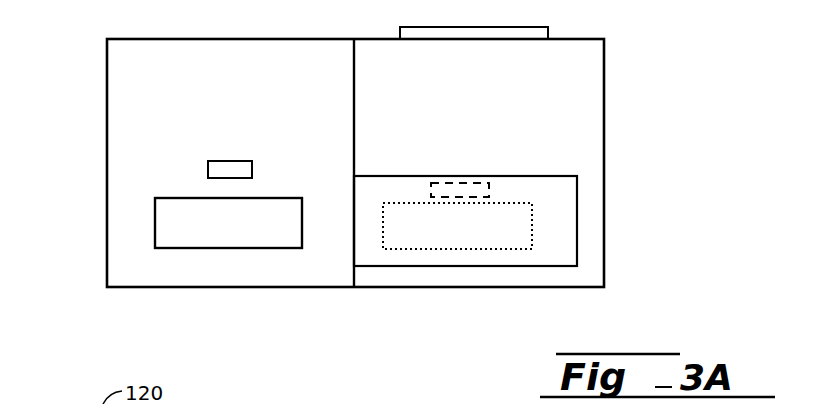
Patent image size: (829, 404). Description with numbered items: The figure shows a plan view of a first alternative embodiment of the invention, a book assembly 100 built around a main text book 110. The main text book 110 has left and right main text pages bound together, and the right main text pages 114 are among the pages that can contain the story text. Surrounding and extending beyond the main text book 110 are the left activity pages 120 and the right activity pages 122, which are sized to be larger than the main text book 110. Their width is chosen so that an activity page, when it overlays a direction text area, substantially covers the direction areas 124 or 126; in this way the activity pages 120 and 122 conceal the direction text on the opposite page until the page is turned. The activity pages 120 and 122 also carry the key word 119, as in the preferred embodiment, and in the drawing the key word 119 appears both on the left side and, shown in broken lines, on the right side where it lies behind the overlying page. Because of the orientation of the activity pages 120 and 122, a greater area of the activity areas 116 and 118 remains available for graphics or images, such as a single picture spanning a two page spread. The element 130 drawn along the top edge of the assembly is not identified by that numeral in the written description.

The book assembly 100 is at (252, 38).
The main text book 110 is at (578, 206).
The right main text pages 114 is at (563, 247).
The activity area 116 is at (256, 73).
The activity area 118 is at (508, 73).
The key word 119 is at (232, 161).
The left activity pages 120 is at (122, 58).
The right activity pages 122 is at (588, 62).
The direction area 124 is at (155, 213).
The direction area 126 is at (405, 250).
The top bar 130 is at (472, 30).